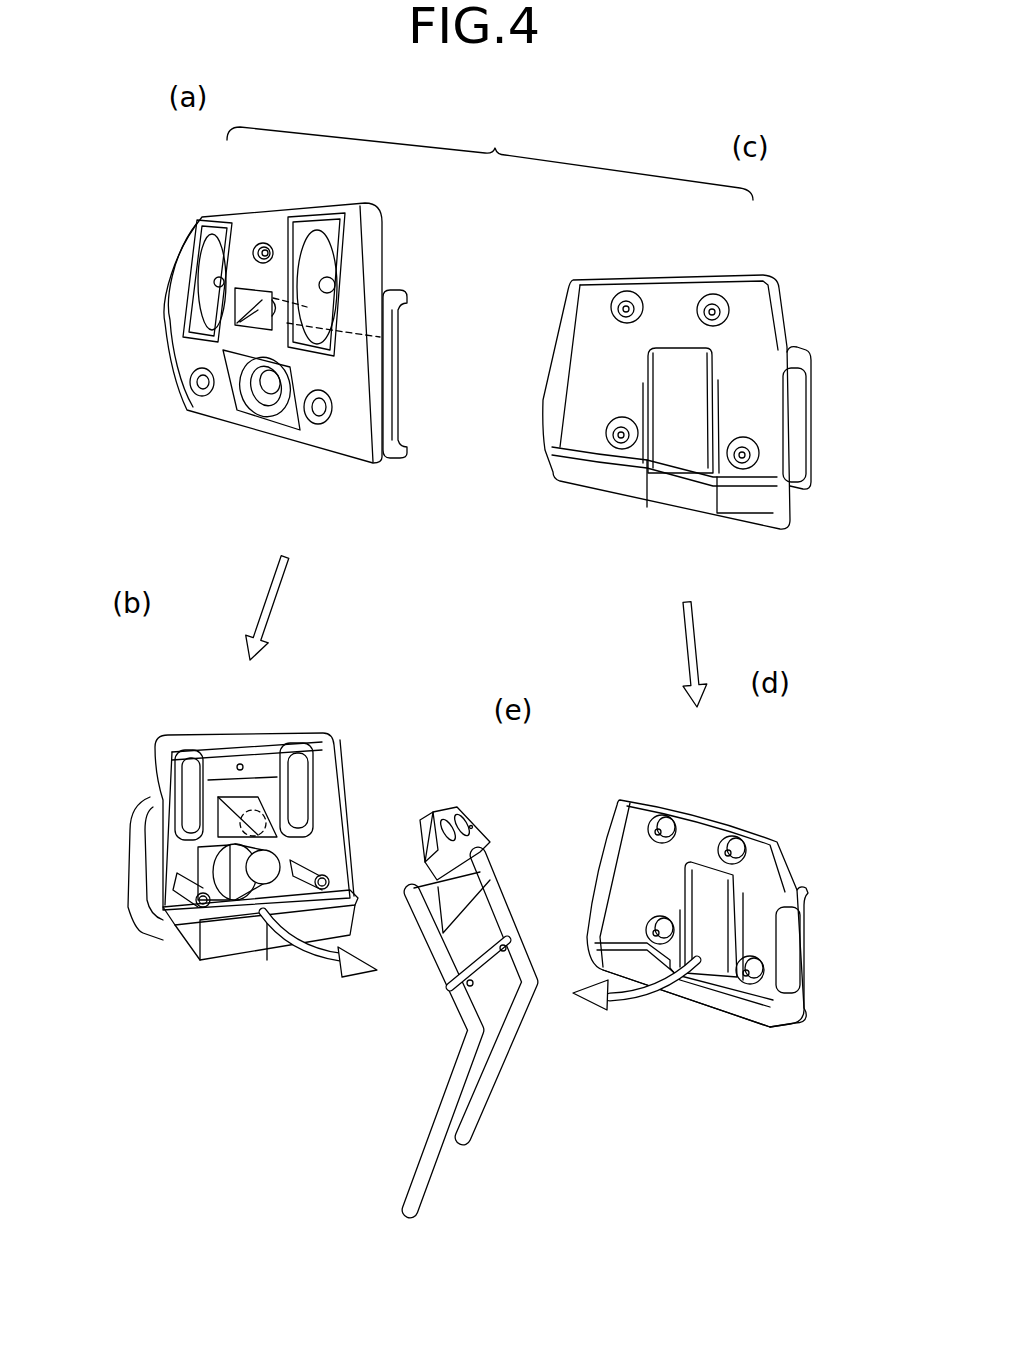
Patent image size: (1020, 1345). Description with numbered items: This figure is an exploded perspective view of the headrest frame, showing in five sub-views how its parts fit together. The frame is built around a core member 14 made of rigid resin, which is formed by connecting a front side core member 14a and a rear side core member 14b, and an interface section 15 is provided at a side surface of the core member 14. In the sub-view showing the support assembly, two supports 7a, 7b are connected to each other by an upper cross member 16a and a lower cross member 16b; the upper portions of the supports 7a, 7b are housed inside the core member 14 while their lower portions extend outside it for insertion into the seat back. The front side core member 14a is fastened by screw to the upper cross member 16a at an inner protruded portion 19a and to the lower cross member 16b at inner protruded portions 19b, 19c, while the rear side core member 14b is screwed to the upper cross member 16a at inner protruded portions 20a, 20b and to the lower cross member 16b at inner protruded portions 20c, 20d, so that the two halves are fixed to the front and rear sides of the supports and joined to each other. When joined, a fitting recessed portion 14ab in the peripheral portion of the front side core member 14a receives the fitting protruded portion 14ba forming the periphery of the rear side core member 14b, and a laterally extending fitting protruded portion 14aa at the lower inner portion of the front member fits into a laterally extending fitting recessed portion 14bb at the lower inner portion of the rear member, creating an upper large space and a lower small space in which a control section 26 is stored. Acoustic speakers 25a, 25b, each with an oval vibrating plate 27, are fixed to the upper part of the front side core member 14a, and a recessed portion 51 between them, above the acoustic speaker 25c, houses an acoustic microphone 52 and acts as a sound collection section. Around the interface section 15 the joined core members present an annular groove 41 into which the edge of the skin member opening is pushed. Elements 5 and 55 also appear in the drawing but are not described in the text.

The core member 14 is at (490, 159).
The front side core member 14a is at (270, 205).
The fitting protruded portion 14aa is at (220, 925).
The fitting recessed portion 14ab is at (300, 742).
The rear side core member 14b is at (700, 274).
The fitting protruded portion 14ba is at (560, 318).
The fitting recessed portion 14bb is at (710, 995).
The interface section 15 is at (805, 420).
The engagement hole 5 is at (790, 935).
The support 7a is at (422, 1188).
The support 7b is at (475, 1110).
The upper cross member 16a is at (460, 808).
The lower cross member 16b is at (480, 937).
The inner protruded portion 19a is at (268, 248).
The inner protruded portion 19b is at (320, 415).
The inner protruded portion 19c is at (196, 380).
The inner protruded portion 20a is at (625, 292).
The inner protruded portion 20b is at (720, 308).
The inner protruded portion 20c is at (742, 438).
The inner protruded portion 20d is at (619, 418).
The acoustic speaker 25a is at (335, 250).
The acoustic speaker 25b is at (195, 255).
The acoustic speaker 25c is at (265, 390).
The control section 26 is at (275, 950).
The vibrating plate 27 is at (212, 268).
The annular groove 41 is at (398, 380).
The recessed portion 51 is at (303, 302).
The acoustic microphone 52 is at (365, 334).
The projection 55 is at (283, 300).